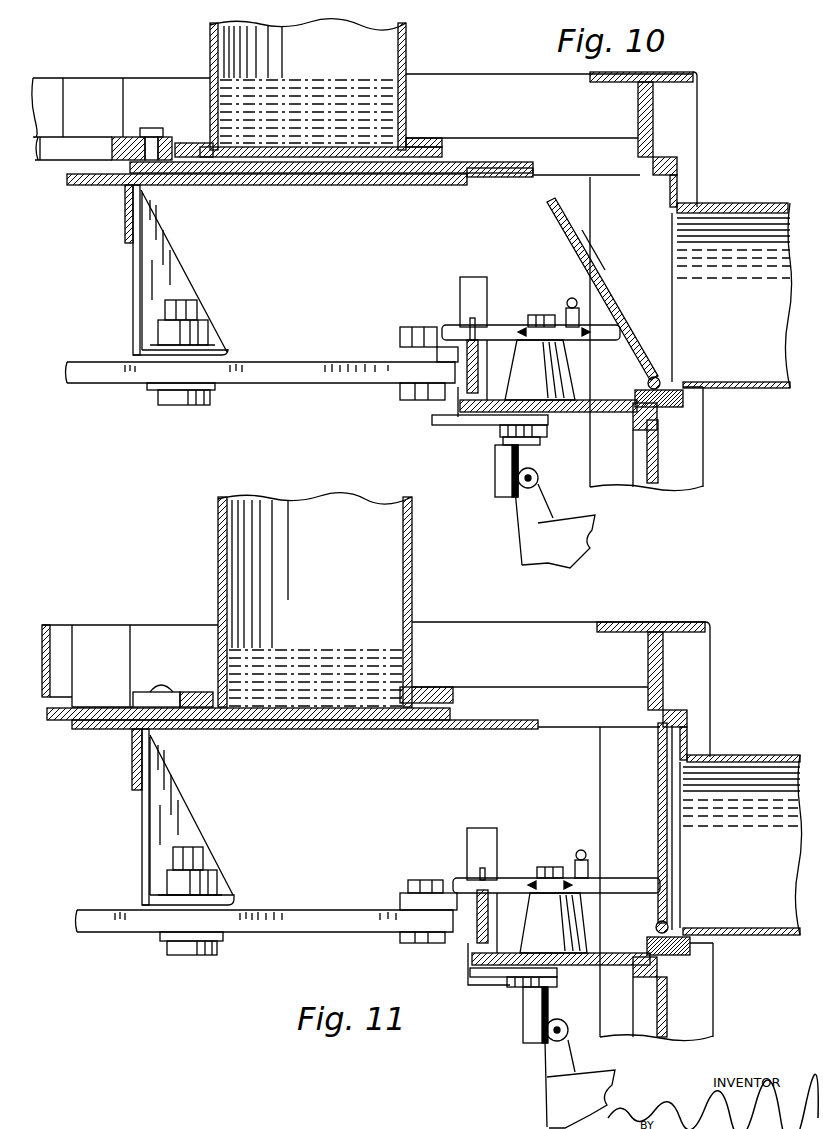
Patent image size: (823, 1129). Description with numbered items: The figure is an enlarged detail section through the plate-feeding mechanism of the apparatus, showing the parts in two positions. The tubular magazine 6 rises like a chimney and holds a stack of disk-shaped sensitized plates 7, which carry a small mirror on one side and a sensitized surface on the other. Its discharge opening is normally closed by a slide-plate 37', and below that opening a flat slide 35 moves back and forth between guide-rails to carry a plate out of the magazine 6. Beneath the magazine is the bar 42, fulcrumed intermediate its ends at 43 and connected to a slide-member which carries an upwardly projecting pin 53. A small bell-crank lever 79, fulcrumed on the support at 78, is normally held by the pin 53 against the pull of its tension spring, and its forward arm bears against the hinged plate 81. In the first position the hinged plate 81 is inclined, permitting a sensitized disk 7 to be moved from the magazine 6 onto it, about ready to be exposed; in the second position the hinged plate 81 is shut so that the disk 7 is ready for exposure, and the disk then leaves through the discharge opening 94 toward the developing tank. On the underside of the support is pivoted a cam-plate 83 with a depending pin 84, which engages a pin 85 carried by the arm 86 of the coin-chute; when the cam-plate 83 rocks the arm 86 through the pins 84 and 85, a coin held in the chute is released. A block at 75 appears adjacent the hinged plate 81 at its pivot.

In FIG. 10, the magazine 6 is at (405, 38).
In FIG. 11, the magazine 6 is at (262, 563).
In FIG. 10, the sensitized plate 7 is at (315, 93).
In FIG. 11, the sensitized plate 7 is at (320, 652).
In FIG. 10, the slide-plate 37' is at (321, 126).
In FIG. 10, the flat slide 35 is at (300, 182).
In FIG. 11, the flat slide 35 is at (200, 730).
In FIG. 10, the hinged plate 81 is at (558, 227).
In FIG. 11, the hinged plate 81 is at (670, 773).
In FIG. 10, the pin 53 is at (470, 320).
In FIG. 11, the pin 53 is at (480, 870).
In FIG. 10, the bell-crank lever 79 is at (502, 322).
In FIG. 11, the bell-crank lever 79 is at (508, 880).
In FIG. 10, the fulcrum 78 is at (532, 317).
In FIG. 11, the fulcrum 78 is at (553, 867).
In FIG. 10, the bar 42 is at (303, 375).
In FIG. 11, the bar 42 is at (298, 920).
In FIG. 10, the fulcrum 43 is at (182, 405).
In FIG. 11, the fulcrum 43 is at (195, 955).
In FIG. 10, the cam-plate 83 is at (455, 420).
In FIG. 11, the cam-plate 83 is at (508, 977).
In FIG. 10, the pin 84 is at (497, 470).
In FIG. 11, the pin 84 is at (532, 1022).
In FIG. 10, the pin 85 is at (535, 472).
In FIG. 11, the pin 85 is at (582, 1023).
In FIG. 10, the arm 86 is at (520, 523).
In FIG. 11, the arm 86 is at (545, 1093).
In FIG. 10, the bearing block 75 is at (683, 403).
In FIG. 11, the bearing block 75 is at (693, 950).
In FIG. 10, the discharge opening 94 is at (665, 413).
In FIG. 11, the discharge opening 94 is at (670, 960).